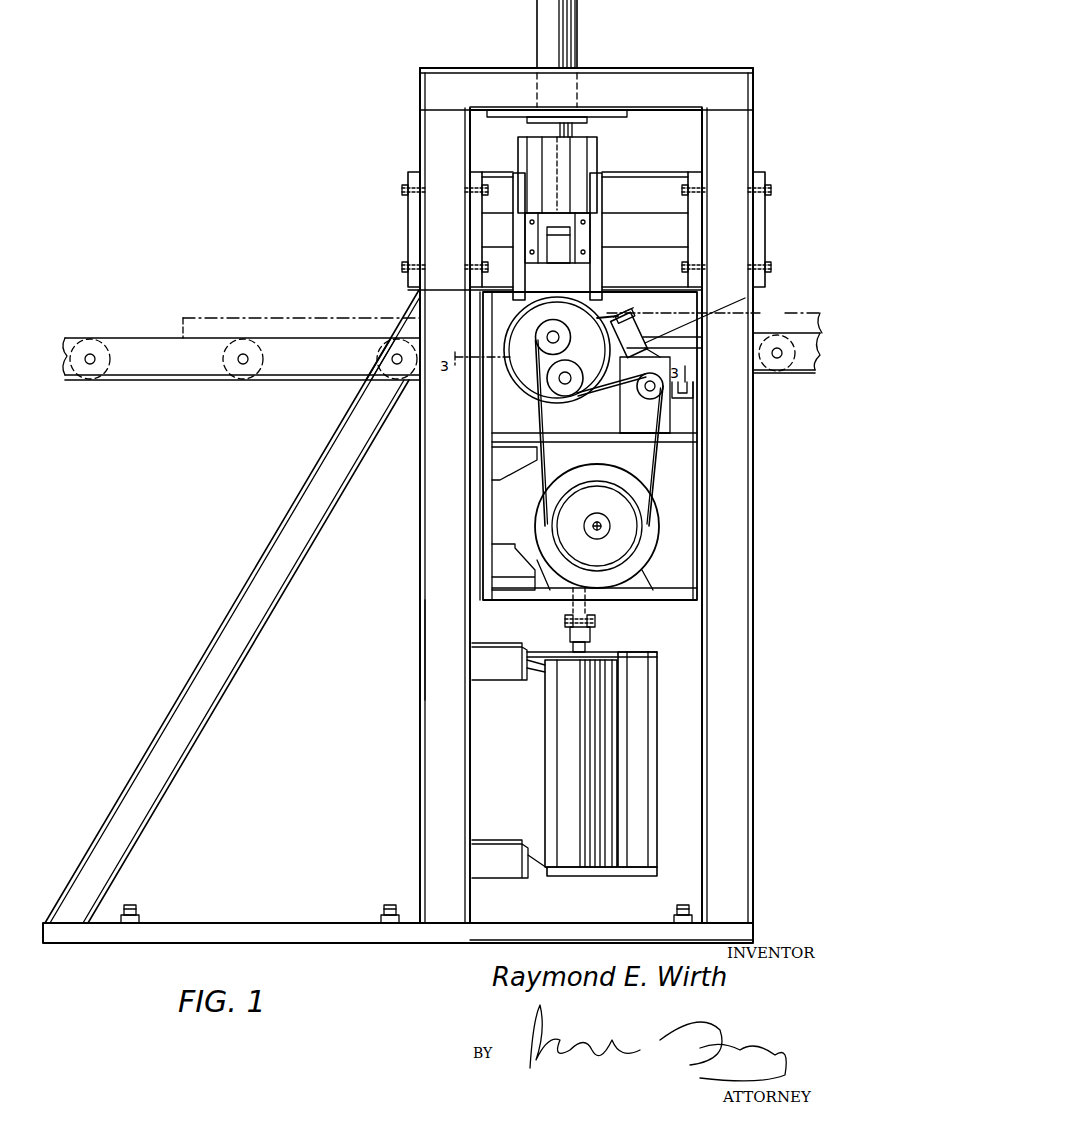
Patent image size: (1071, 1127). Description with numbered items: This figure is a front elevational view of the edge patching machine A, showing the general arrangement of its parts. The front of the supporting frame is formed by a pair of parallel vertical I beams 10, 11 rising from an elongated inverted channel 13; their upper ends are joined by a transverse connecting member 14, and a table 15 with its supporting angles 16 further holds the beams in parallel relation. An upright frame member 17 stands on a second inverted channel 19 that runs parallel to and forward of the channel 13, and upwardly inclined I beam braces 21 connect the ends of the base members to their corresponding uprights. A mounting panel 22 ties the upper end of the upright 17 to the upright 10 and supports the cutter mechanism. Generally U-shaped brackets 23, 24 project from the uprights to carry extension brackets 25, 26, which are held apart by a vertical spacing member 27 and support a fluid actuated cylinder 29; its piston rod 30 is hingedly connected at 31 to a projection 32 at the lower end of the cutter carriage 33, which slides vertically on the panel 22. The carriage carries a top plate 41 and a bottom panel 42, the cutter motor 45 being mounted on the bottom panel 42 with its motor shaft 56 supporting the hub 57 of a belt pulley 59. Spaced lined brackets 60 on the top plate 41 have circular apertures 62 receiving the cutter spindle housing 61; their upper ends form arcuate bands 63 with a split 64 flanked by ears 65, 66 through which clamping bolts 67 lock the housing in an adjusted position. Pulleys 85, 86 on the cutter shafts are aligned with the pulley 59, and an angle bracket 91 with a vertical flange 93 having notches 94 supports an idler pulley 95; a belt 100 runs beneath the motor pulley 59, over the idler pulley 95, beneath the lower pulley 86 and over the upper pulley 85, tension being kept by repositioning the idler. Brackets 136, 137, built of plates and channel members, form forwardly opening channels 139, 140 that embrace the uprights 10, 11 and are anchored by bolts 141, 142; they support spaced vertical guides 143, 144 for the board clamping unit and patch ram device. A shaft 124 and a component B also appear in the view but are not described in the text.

The I beam 10 is at (438, 128).
The I beam 11 is at (737, 122).
The inverted channel 13 is at (560, 925).
The transverse connecting member 14 is at (668, 78).
The table 15 is at (720, 317).
The supporting angles 16 is at (697, 346).
The upright frame member 17 is at (440, 643).
The inverted channel 19 is at (300, 925).
The I beam brace 21 is at (215, 640).
The mounting panel 22 is at (470, 503).
The U-shaped bracket 23 is at (490, 672).
The U-shaped bracket 24 is at (490, 852).
The extension bracket 25 is at (610, 652).
The extension bracket 26 is at (605, 875).
The vertical spacing member 27 is at (645, 758).
The fluid actuated cylinder 29 is at (575, 763).
The piston rod 30 is at (570, 650).
The hinged connection 31 is at (595, 620).
The projection 32 is at (575, 617).
The cutter carriage 33 is at (508, 555).
The top plate 41 is at (690, 433).
The bottom panel 42 is at (685, 595).
The cutter motor 45 is at (632, 525).
The motor shaft 56 is at (606, 522).
The hub 57 is at (604, 512).
The belt pulley 59 is at (630, 538).
The lined brackets 60 is at (565, 425).
The cutter spindle housing 61 is at (508, 375).
The circular apertures 62 is at (520, 393).
The arcuate bands 63 is at (599, 316).
The split 64 is at (695, 309).
The ear 65 is at (635, 333).
The ear 66 is at (662, 358).
The clamping bolts 67 is at (628, 318).
The pulley 85 is at (562, 318).
The pulley 86 is at (579, 367).
The angle bracket 91 is at (675, 410).
The vertical flange 93 is at (645, 420).
The vertical notches 94 is at (690, 396).
The idler pulley 95 is at (645, 390).
The belt 100 is at (663, 477).
The vertical shaft 124 is at (540, 30).
The bracket 136 is at (404, 233).
The bracket 137 is at (760, 226).
The forwardly opening channel 139 is at (420, 207).
The forwardly opening channel 140 is at (755, 207).
The bolts 141 is at (404, 190).
The bolts 142 is at (682, 188).
The vertical guide 143 is at (515, 190).
The vertical guide 144 is at (600, 187).
The edge patching machine A is at (418, 107).
The conveyor B is at (262, 316).